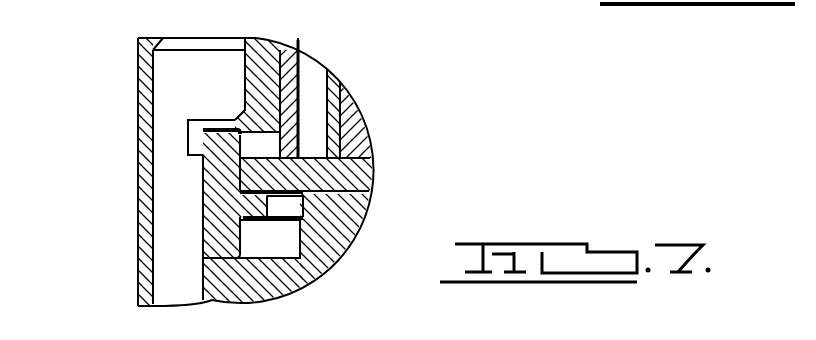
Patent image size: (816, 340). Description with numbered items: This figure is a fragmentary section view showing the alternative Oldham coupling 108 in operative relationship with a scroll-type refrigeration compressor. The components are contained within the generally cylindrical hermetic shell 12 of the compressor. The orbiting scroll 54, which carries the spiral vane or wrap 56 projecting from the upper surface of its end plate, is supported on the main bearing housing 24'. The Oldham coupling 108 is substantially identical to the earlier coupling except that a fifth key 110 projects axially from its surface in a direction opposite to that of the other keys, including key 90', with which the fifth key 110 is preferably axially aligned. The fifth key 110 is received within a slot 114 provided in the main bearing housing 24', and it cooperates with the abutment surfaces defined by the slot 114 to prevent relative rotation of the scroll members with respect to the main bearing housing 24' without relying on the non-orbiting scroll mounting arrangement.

The hermetic shell 12 is at (140, 72).
The spiral vane 56 is at (265, 58).
The key 90' is at (157, 141).
The Oldham coupling 108 is at (192, 200).
The fifth key 110 is at (212, 246).
The orbiting scroll 54 is at (360, 173).
The main bearing housing 24' is at (315, 171).
The slot 114 is at (310, 258).